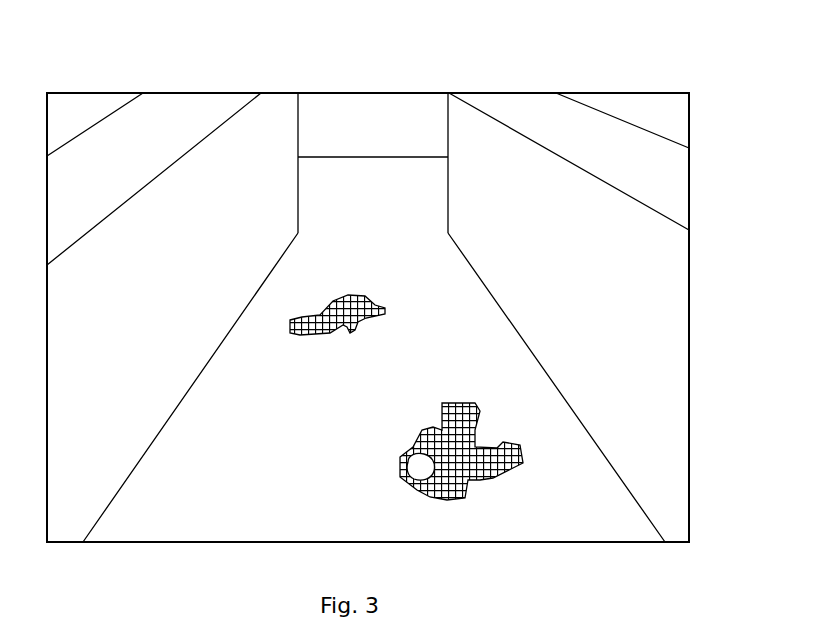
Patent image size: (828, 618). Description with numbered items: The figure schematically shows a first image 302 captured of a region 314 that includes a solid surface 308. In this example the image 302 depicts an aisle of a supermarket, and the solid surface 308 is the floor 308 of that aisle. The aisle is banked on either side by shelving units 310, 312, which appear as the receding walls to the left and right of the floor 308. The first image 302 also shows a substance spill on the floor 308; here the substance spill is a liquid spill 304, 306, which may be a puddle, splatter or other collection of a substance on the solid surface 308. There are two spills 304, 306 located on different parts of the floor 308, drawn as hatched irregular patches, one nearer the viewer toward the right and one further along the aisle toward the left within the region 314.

The first image 302 is at (658, 92).
The liquid spill 304 is at (508, 488).
The liquid spill 306 is at (384, 327).
The solid surface 308 is at (232, 475).
The shelving unit 310 is at (478, 246).
The shelving unit 312 is at (259, 249).
The region 314 is at (597, 164).